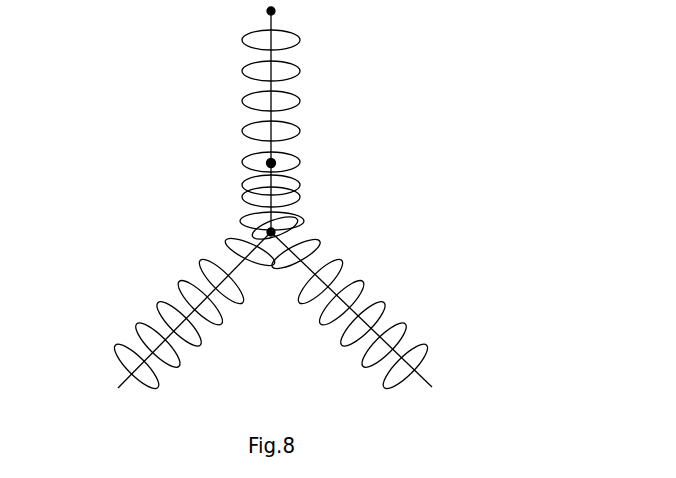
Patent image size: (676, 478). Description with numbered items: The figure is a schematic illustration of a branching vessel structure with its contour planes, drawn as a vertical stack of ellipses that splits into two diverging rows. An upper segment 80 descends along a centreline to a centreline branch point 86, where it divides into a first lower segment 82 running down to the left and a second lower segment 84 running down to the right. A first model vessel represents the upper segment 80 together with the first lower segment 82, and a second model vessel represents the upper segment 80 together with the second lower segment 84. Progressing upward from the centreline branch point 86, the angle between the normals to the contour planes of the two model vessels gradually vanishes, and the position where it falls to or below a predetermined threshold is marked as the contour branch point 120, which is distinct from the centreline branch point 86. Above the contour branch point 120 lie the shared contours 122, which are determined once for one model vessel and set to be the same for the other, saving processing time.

The upper segment 80 is at (273, 53).
The shared contours 122 is at (238, 22).
The contour branch point 120 is at (275, 163).
The centreline branch point 86 is at (275, 232).
The first lower segment 82 is at (178, 342).
The second lower segment 84 is at (370, 337).